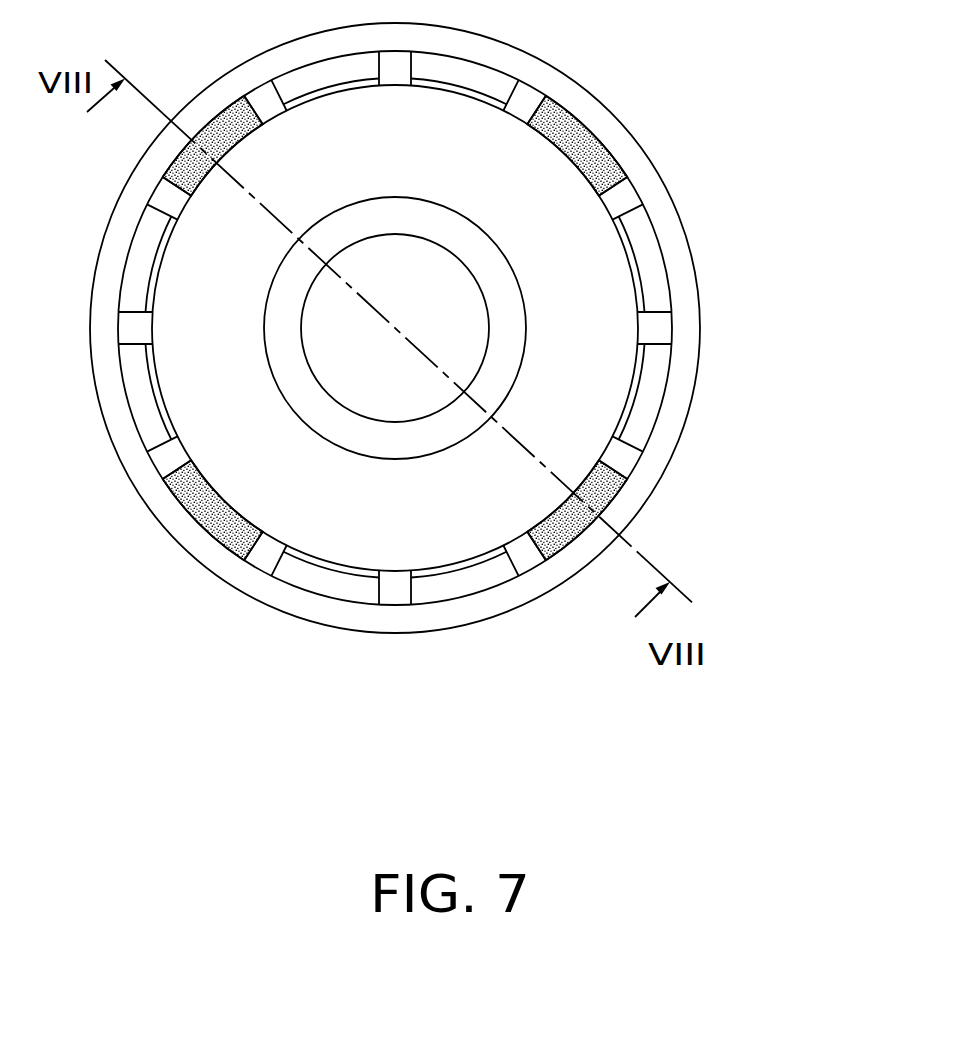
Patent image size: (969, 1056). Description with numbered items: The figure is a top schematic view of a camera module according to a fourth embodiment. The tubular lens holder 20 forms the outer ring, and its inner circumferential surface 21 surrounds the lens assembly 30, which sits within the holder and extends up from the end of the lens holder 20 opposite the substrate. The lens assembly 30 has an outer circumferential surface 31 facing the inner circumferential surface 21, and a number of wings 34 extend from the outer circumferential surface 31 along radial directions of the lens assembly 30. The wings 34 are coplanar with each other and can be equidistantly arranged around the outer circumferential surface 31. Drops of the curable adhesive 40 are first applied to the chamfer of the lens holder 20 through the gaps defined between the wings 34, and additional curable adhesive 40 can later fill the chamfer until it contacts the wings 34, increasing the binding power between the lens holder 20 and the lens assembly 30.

The lens holder 20 is at (685, 278).
The inner circumferential surface 21 is at (640, 272).
The lens assembly 30 is at (358, 522).
The outer circumferential surface 31 is at (635, 372).
The wings 34 is at (623, 455).
The curable adhesive 40 is at (578, 122).